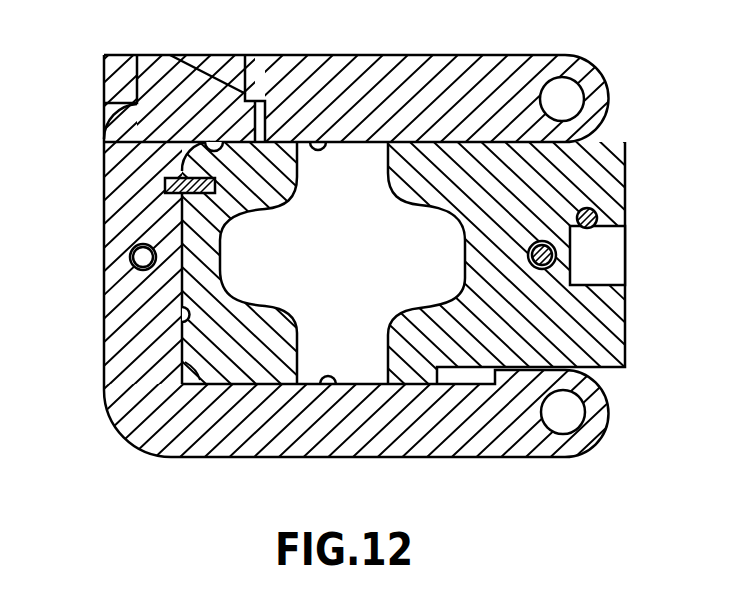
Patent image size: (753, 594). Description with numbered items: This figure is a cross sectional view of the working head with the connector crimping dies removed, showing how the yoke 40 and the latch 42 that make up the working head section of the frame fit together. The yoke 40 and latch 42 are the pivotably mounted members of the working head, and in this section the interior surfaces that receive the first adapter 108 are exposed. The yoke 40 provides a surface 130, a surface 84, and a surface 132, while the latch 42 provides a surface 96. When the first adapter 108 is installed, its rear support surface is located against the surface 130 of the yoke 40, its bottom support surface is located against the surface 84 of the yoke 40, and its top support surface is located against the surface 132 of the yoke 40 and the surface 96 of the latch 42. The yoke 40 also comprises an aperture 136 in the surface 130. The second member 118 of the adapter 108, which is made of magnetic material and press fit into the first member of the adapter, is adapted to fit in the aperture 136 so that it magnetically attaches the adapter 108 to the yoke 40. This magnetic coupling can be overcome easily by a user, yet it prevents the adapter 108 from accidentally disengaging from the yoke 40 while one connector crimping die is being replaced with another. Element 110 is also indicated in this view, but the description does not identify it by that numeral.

The yoke 40 is at (153, 448).
The latch 42 is at (412, 55).
The surface of the yoke 84 is at (326, 386).
The surface of the latch 96 is at (326, 142).
The first adapter 108 is at (200, 380).
The insert block 110 is at (626, 322).
The second member 118 is at (168, 173).
The surface of the yoke 130 is at (182, 310).
The surface of the yoke 132 is at (213, 147).
The aperture 136 is at (181, 193).